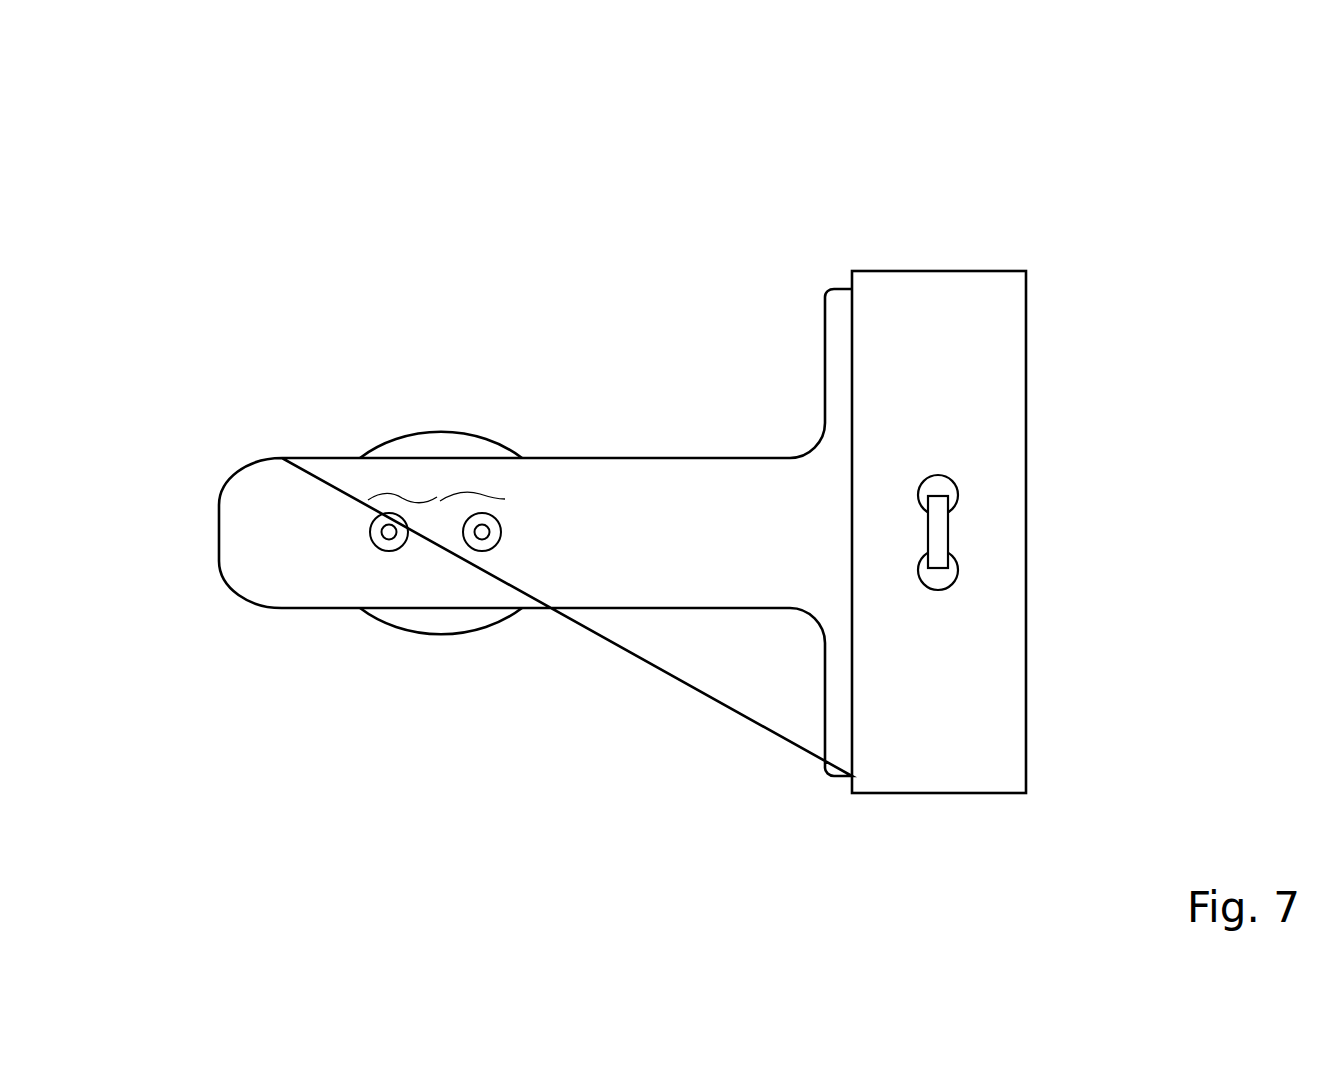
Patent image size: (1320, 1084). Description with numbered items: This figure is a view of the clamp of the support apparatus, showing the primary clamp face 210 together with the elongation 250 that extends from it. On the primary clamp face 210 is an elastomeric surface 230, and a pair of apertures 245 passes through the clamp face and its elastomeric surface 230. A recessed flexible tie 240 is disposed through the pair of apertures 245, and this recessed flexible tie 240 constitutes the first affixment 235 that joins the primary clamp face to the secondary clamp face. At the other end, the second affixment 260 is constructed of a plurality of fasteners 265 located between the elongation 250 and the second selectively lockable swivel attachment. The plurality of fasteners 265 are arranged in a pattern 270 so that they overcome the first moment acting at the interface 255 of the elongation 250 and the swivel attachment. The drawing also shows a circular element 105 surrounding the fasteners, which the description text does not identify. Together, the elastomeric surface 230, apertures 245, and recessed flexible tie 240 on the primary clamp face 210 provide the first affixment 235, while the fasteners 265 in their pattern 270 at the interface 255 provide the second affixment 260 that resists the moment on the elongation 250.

The primary clamp face 210 is at (1120, 125).
The first affixment 235 is at (698, 436).
The elastomeric surface 230 is at (1026, 328).
The apertures 245 is at (950, 480).
The recessed flexible tie 240 is at (949, 532).
The elongation 250 is at (237, 479).
The interface 255 is at (417, 458).
The second affixment 260 is at (556, 334).
The plurality of fasteners 265 is at (393, 538).
The pattern 270 is at (437, 498).
The disc 105 is at (467, 433).